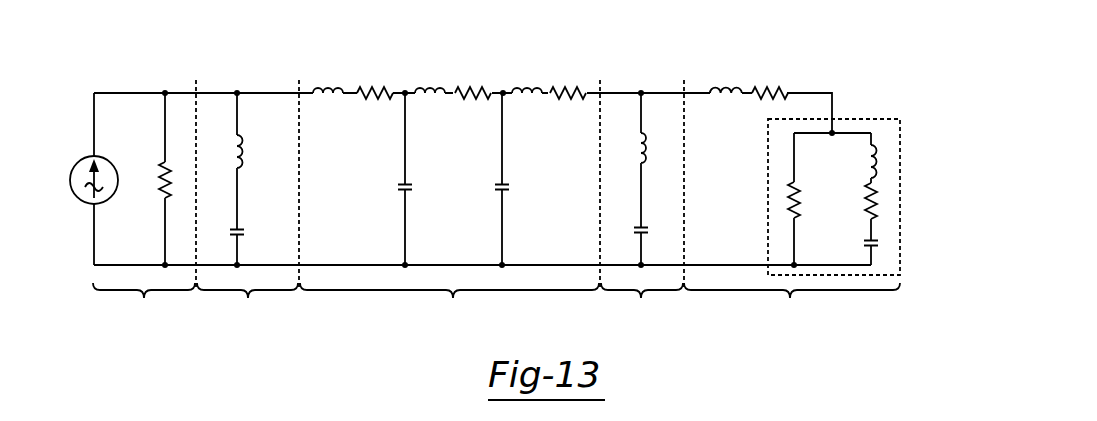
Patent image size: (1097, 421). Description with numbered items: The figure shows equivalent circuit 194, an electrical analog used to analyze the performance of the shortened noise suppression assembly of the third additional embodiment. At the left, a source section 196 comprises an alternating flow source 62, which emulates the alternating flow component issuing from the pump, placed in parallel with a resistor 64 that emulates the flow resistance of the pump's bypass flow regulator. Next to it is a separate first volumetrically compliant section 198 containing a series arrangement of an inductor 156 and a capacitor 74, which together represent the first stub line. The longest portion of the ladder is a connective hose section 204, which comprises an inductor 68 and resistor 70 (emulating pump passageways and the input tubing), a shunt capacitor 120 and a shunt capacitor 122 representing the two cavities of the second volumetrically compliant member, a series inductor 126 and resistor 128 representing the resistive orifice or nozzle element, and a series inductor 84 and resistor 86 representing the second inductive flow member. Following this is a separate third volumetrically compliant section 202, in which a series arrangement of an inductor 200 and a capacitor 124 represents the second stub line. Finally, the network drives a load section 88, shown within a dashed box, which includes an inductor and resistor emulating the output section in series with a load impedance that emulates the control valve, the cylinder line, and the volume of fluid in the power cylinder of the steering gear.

The alternating flow source 62 is at (80, 162).
The resistor 64 is at (138, 218).
The inductor 156 is at (244, 147).
The capacitor 74 is at (240, 228).
The inductor 68 is at (319, 82).
The resistor 70 is at (380, 62).
The inductor 126 is at (433, 82).
The resistor 128 is at (490, 68).
The inductor 84 is at (532, 52).
The resistor 86 is at (592, 58).
The capacitor 120 is at (400, 183).
The capacitor 122 is at (497, 183).
The inductor 200 is at (648, 140).
The capacitor 124 is at (636, 228).
The load section 88 is at (792, 210).
The equivalent circuit 194 is at (740, 12).
The source section 196 is at (144, 207).
The first volumetrically compliant section 198 is at (248, 207).
The connective hose section 204 is at (450, 207).
The third volumetrically compliant section 202 is at (642, 207).